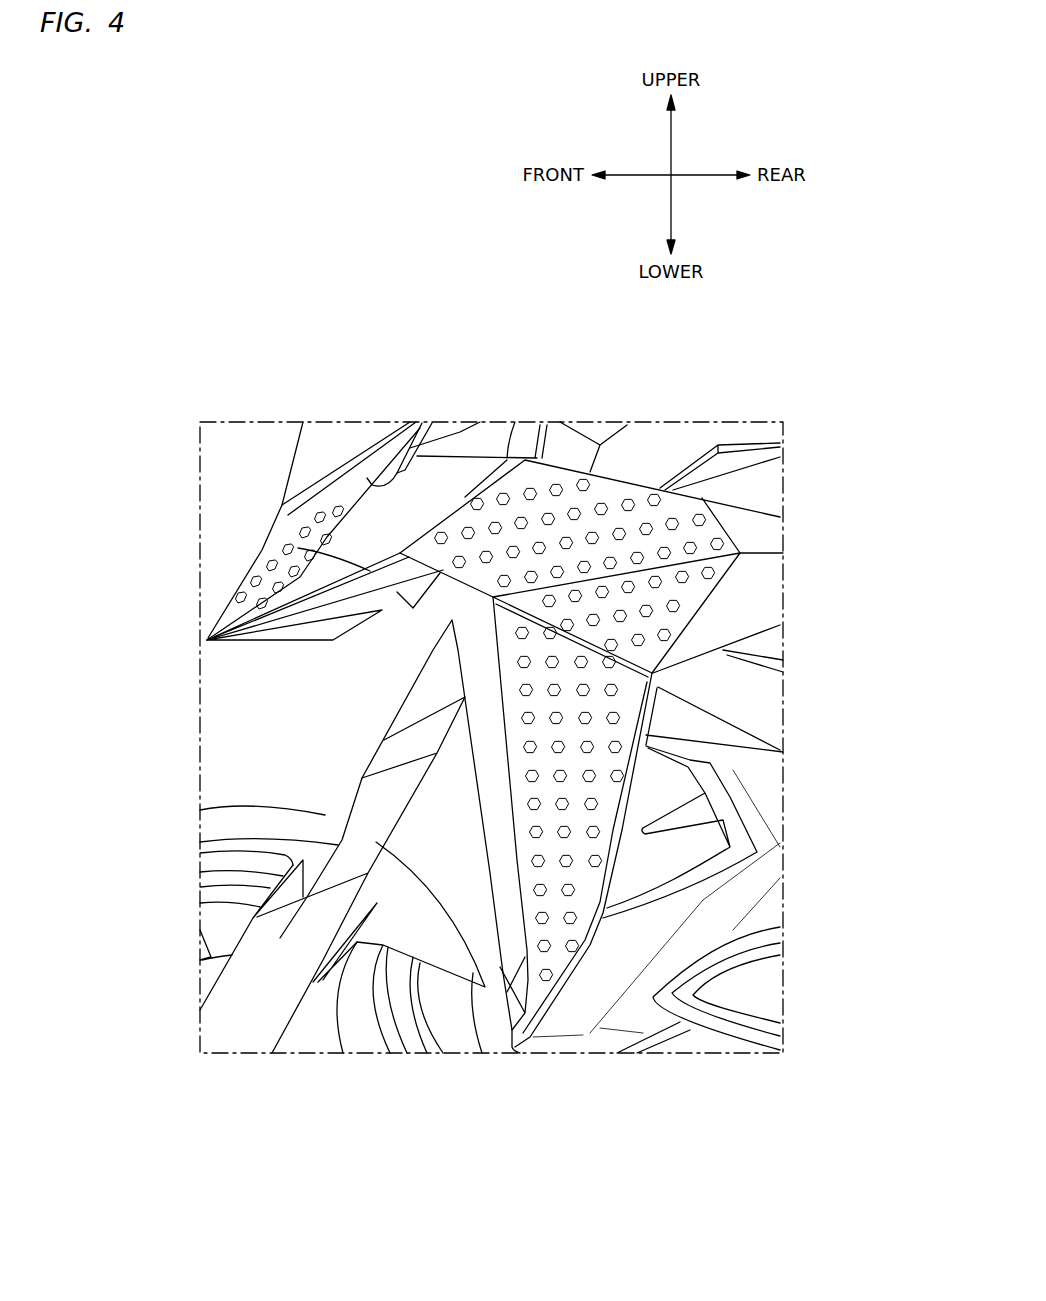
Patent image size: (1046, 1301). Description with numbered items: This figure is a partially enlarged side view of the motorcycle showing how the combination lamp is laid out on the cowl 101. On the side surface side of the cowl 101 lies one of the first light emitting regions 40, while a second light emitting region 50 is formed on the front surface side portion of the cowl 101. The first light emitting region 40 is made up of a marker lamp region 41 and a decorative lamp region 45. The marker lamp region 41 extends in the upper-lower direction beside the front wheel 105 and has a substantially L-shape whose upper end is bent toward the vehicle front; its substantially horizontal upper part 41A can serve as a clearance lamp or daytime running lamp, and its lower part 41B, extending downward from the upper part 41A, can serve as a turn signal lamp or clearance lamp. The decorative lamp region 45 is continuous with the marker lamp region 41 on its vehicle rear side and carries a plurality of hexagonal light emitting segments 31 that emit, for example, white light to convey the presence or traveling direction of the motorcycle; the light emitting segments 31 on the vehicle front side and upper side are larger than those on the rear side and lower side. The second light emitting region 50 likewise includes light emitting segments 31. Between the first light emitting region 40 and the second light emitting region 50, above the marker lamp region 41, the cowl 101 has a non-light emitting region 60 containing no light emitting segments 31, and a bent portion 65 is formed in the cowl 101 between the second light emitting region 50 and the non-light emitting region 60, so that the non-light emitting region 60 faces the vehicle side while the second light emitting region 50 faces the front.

The cowl 101 is at (367, 467).
The bent portion 65 is at (420, 450).
The non-light emitting region 60 is at (420, 492).
The light emitting segments 31 is at (617, 478).
The second light emitting region 50 is at (263, 540).
The decorative lamp region 45 is at (703, 527).
The first light emitting regions 40 is at (482, 672).
The marker lamp region 41 is at (276, 614).
The upper part 41A is at (330, 613).
The lower part 41B is at (477, 663).
The front wheel 105 is at (360, 1033).